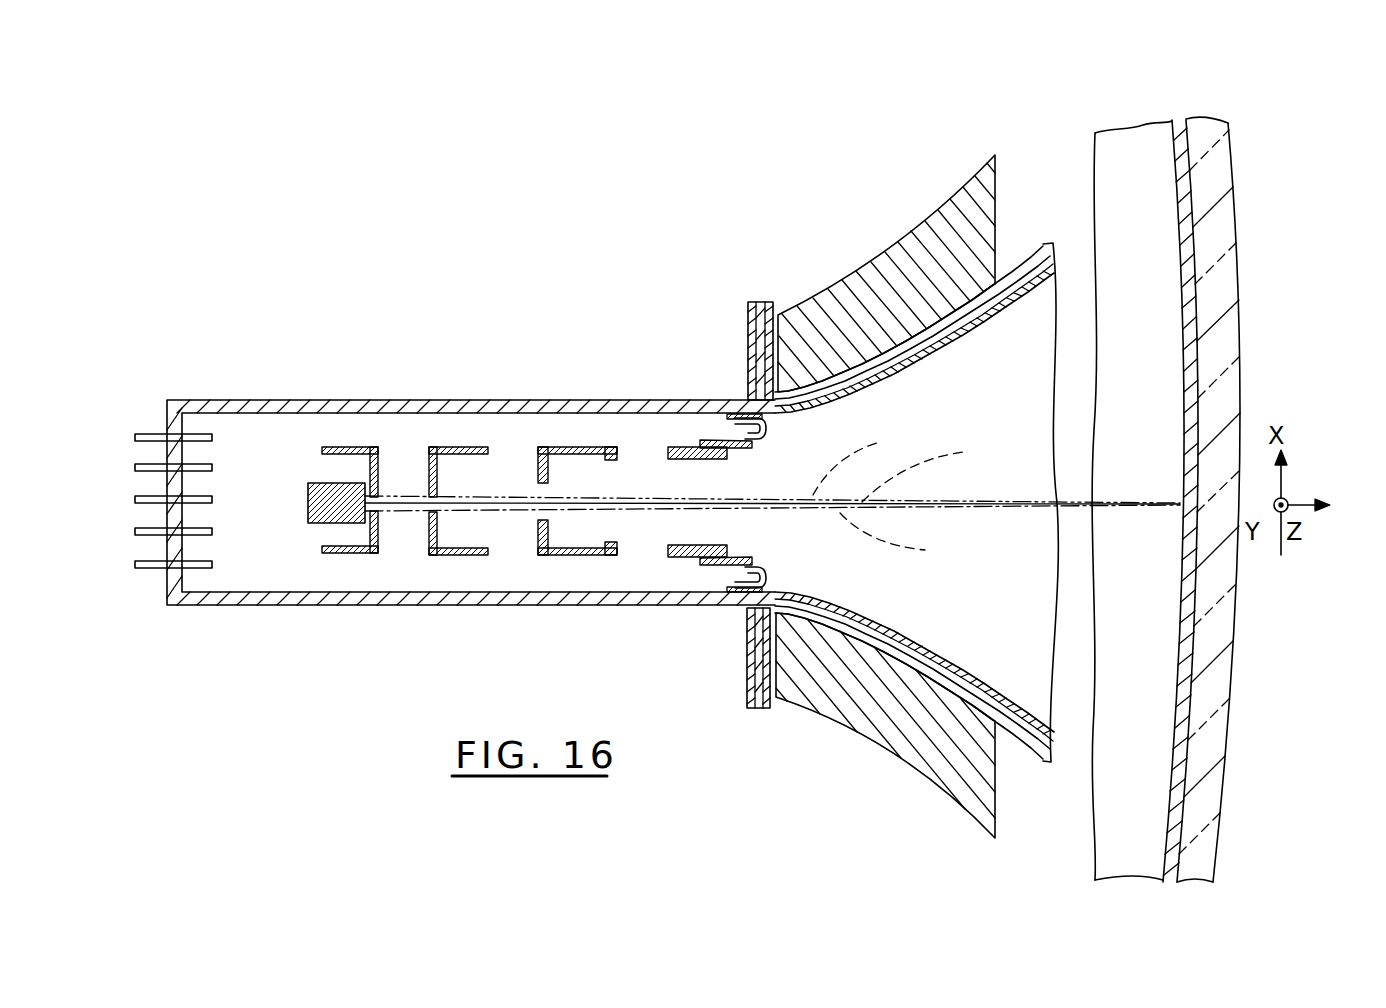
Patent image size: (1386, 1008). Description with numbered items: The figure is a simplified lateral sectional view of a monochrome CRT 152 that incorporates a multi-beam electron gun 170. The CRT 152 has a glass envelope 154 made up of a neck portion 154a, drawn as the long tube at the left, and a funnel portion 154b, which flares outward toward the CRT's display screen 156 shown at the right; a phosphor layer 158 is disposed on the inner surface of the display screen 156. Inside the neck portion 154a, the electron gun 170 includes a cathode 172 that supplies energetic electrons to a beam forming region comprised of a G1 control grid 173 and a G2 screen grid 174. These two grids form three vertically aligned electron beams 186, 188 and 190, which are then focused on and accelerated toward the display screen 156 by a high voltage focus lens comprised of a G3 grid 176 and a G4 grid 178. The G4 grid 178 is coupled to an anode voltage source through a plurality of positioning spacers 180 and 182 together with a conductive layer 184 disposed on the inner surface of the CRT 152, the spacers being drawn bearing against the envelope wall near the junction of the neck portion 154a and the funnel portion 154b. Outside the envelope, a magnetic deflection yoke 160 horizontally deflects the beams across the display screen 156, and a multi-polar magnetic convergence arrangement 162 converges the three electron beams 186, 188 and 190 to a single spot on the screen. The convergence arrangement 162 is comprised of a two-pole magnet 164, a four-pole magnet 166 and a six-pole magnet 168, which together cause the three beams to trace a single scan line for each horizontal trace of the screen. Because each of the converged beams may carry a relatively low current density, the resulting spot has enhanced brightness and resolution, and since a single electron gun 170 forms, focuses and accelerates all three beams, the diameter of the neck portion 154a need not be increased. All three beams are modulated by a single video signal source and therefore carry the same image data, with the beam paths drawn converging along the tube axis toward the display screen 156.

The monochrome CRT 152 is at (578, 262).
The glass envelope 154 is at (540, 400).
The neck portion 154a is at (378, 400).
The funnel portion 154b is at (1035, 262).
The display screen 156 is at (1230, 170).
The phosphor layer 158 is at (1172, 150).
The magnetic deflection yoke 160 is at (960, 215).
The multi-polar magnetic convergence arrangement 162 is at (773, 295).
The two-pole magnet 164 is at (748, 695).
The four-pole magnet 166 is at (757, 709).
The six-pole magnet 168 is at (782, 700).
The multi-beam electron gun 170 is at (512, 570).
The cathode 172 is at (308, 497).
The G1 control grid 173 is at (340, 554).
The G2 screen grid 174 is at (472, 433).
The G3 grid 176 is at (562, 433).
The G4 grid 178 is at (700, 446).
The positioning spacer 180 is at (765, 434).
The positioning spacer 182 is at (768, 566).
The conductive layer 184 is at (990, 330).
The electron beam 186 is at (869, 459).
The electron beam 188 is at (935, 471).
The electron beam 190 is at (906, 540).